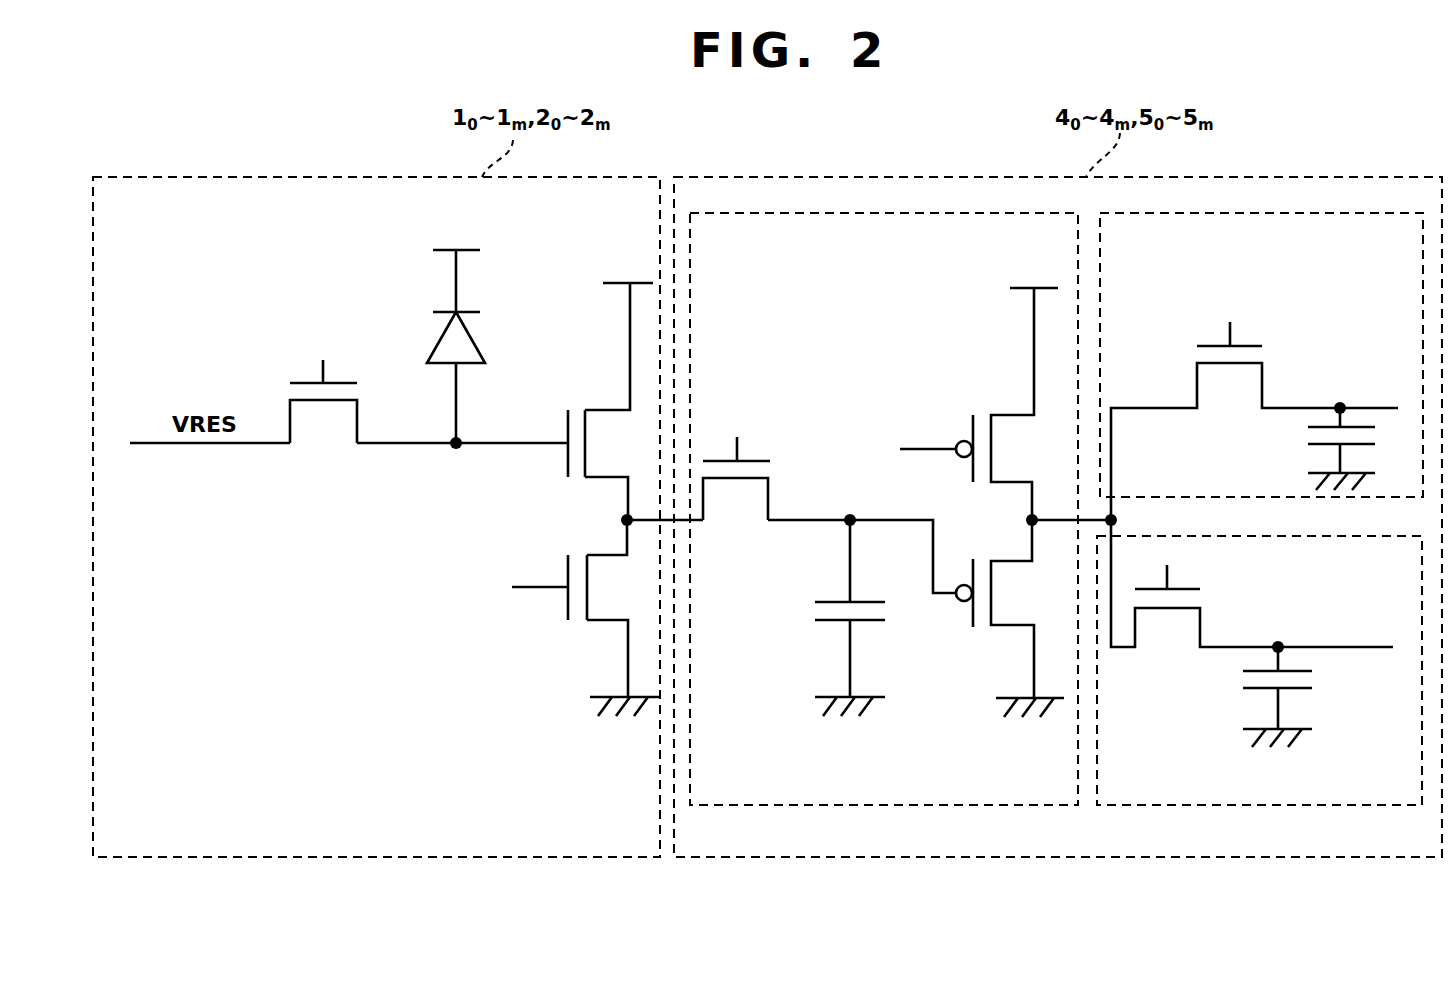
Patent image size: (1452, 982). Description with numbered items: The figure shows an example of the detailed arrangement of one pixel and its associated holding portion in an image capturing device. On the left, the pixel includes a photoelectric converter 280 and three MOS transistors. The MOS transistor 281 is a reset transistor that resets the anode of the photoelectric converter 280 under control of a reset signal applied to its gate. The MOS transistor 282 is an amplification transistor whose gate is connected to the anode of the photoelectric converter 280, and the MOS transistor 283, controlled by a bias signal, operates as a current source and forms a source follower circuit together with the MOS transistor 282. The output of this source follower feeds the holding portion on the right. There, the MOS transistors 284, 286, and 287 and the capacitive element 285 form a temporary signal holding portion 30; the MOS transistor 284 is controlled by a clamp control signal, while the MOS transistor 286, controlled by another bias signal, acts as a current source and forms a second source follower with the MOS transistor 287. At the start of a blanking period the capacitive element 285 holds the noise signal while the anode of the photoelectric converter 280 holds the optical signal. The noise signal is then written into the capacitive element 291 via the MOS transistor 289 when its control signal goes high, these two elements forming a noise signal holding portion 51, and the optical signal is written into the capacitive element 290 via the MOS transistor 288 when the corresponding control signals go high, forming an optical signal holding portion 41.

The temporary signal holding portion 30 is at (765, 213).
The optical signal holding portion 41 is at (1263, 213).
The noise signal holding portion 51 is at (1343, 805).
The photoelectric converter 280 is at (437, 365).
The MOS transistor 281 is at (332, 450).
The MOS transistor 282 is at (554, 484).
The MOS transistor 283 is at (578, 625).
The MOS transistor 284 is at (748, 498).
The capacitive element 285 is at (808, 610).
The MOS transistor 286 is at (984, 412).
The MOS transistor 287 is at (982, 634).
The MOS transistor 288 is at (1230, 375).
The MOS transistor 289 is at (1168, 622).
The capacitive element 290 is at (1302, 435).
The capacitive element 291 is at (1238, 680).